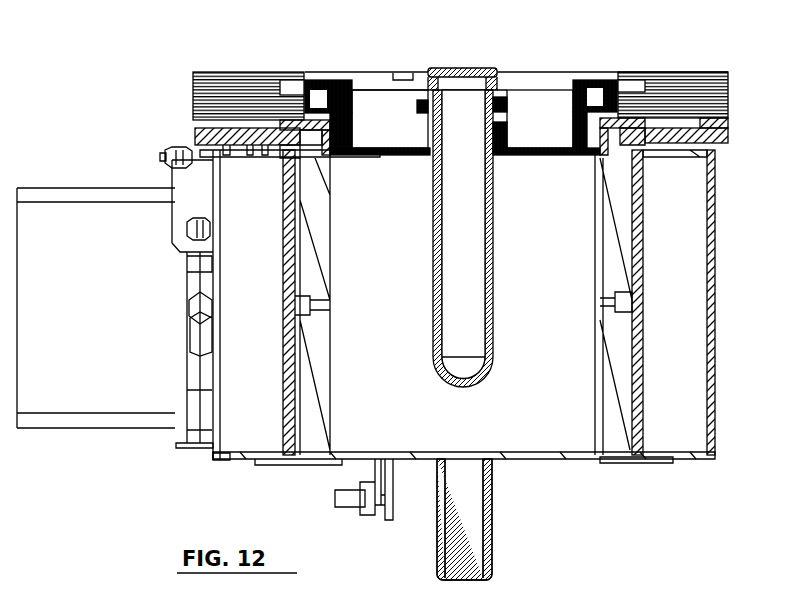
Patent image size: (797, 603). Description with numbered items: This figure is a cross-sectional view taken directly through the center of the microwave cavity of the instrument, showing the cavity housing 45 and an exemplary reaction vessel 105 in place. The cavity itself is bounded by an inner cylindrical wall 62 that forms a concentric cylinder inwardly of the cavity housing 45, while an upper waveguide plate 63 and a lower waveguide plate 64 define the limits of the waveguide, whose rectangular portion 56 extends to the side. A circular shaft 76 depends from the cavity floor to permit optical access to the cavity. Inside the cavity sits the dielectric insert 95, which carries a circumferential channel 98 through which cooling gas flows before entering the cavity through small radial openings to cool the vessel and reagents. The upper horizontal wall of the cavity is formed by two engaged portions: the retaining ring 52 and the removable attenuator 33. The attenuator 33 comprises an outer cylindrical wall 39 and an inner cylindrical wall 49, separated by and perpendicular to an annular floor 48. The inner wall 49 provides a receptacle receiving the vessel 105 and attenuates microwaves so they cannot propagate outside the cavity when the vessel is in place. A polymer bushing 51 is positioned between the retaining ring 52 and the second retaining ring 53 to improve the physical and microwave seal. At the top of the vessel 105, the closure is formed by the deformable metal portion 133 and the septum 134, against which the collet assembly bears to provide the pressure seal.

The removable attenuator 33 is at (395, 155).
The outer cylindrical wall 39 is at (342, 83).
The cavity housing 45 is at (712, 265).
The annular floor 48 is at (539, 152).
The inner cylindrical wall 49 is at (500, 121).
The polymer bushing 51 is at (638, 118).
The retaining ring 52 is at (258, 80).
The retaining ring 53 is at (197, 140).
The rectangular portion of the waveguide 56 is at (95, 425).
The inner cylindrical wall 62 is at (643, 225).
The upper waveguide plate 63 is at (697, 157).
The lower waveguide plate 64 is at (693, 457).
The circular shaft 76 is at (492, 515).
The dielectric insert 95 is at (322, 368).
The circumferential channel 98 is at (295, 301).
The reaction vessel 105 is at (493, 290).
The deformable metal portion 133 is at (466, 68).
The septum 134 is at (497, 68).